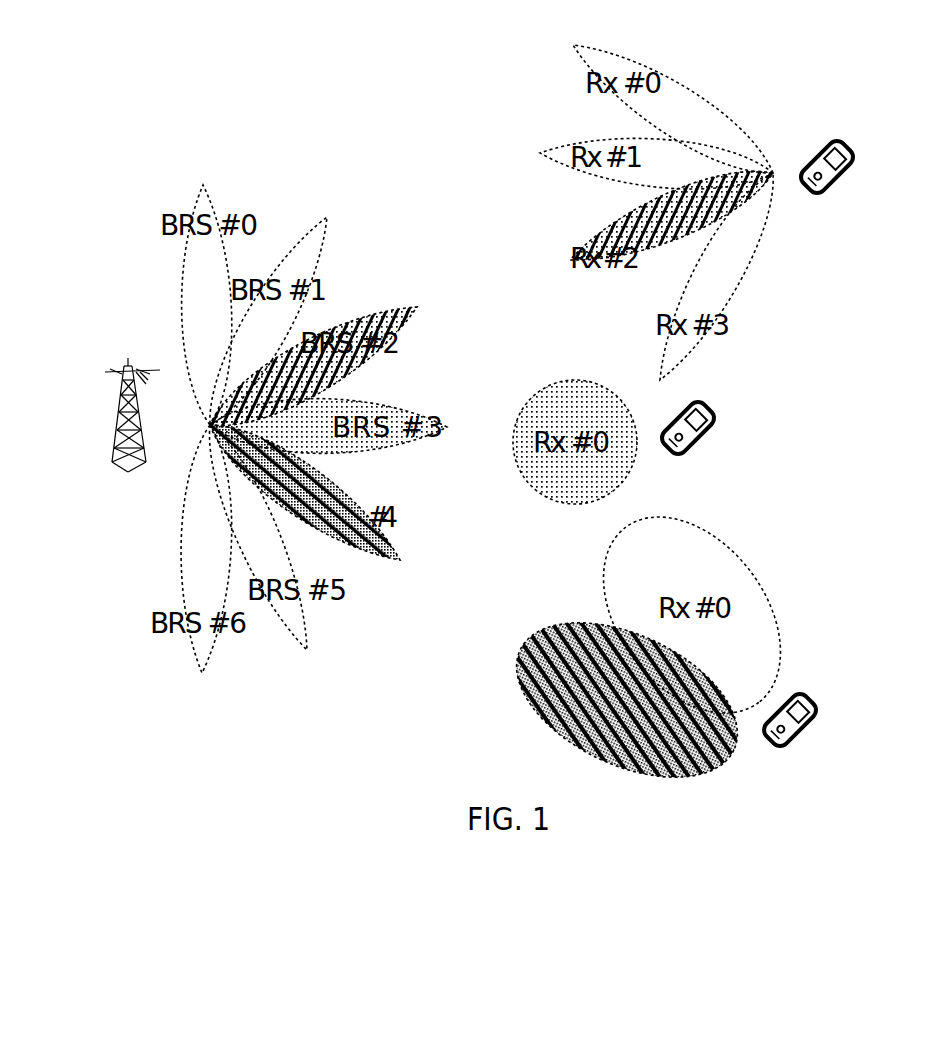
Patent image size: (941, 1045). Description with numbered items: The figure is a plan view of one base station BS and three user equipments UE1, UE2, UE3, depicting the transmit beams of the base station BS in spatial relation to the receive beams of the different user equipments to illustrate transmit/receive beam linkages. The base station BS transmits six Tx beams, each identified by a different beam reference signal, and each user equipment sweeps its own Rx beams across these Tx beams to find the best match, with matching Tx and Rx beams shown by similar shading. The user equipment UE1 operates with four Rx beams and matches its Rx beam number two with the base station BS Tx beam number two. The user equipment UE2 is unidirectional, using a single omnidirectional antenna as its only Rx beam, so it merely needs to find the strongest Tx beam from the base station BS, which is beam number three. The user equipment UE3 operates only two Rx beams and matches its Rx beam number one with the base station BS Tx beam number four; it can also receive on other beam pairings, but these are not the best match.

The base station BS is at (108, 415).
The user equipment 1 UE1 is at (857, 166).
The user equipment 2 UE2 is at (720, 427).
The user equipment 3 UE3 is at (821, 719).